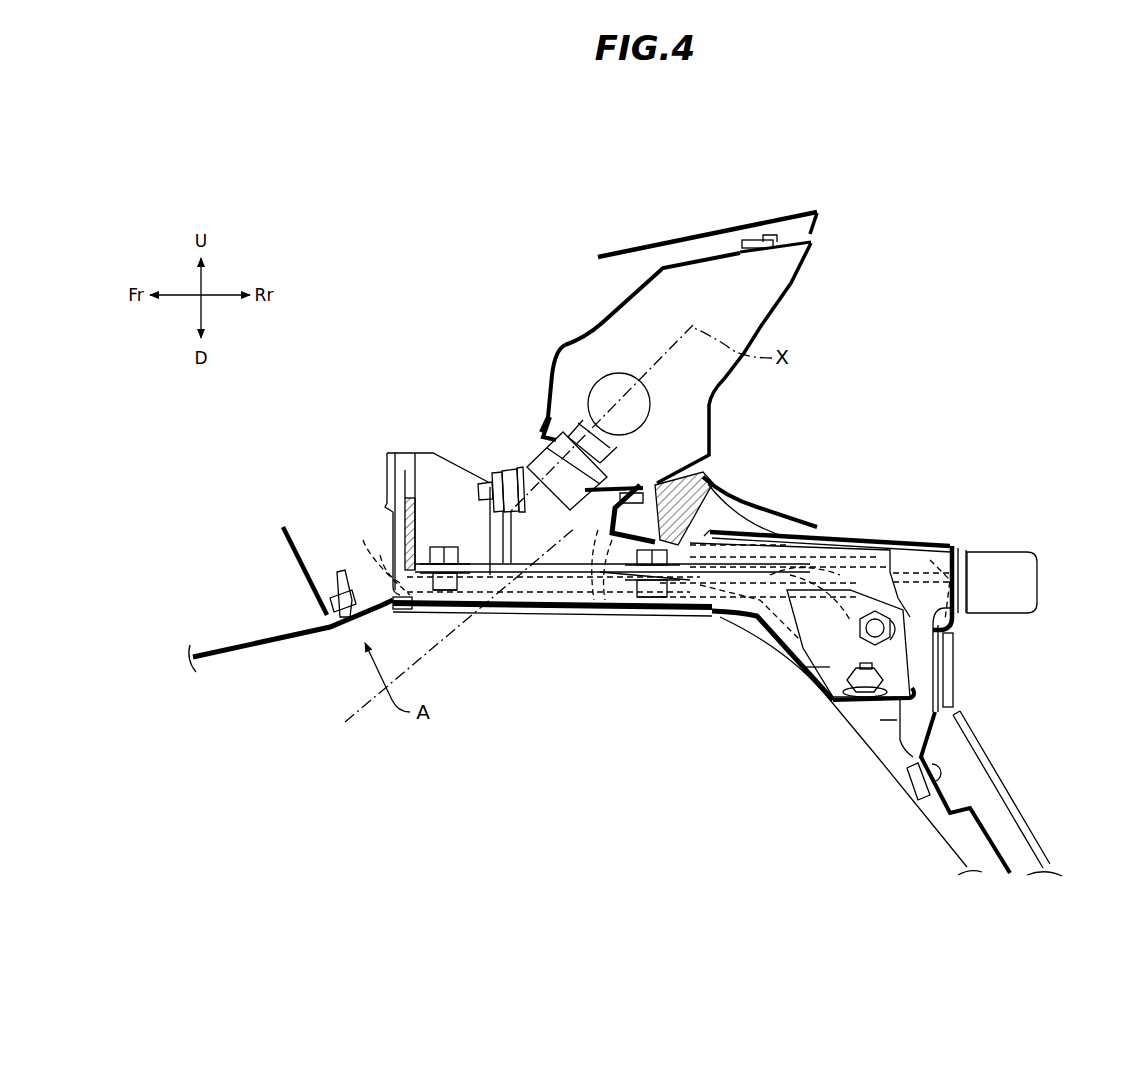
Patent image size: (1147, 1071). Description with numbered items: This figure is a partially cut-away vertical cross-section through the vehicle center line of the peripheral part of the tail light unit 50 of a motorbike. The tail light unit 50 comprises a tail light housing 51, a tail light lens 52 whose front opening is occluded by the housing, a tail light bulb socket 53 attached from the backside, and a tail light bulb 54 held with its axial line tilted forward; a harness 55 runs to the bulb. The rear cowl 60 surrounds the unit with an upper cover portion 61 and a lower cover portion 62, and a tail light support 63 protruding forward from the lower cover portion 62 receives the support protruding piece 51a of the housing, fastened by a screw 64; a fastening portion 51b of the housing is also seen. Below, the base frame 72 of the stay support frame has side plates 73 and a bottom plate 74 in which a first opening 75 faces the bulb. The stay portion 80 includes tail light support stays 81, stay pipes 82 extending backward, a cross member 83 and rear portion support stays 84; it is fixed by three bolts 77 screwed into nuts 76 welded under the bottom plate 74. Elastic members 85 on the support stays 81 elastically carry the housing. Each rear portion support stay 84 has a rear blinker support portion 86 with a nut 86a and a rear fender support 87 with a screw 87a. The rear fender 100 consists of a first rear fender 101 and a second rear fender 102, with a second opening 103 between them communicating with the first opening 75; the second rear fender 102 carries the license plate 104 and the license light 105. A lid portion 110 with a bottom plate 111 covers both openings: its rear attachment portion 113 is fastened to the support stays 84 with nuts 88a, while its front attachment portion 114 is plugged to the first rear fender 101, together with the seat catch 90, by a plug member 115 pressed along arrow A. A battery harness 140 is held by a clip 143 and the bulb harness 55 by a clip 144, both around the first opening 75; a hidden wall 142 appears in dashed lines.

The tail light unit 50 is at (816, 240).
The tail light housing 51 is at (663, 266).
The support protruding piece 51a is at (585, 590).
The fastening portion 51b is at (483, 470).
The tail light lens 52 is at (793, 283).
The tail light bulb socket 53 is at (555, 372).
The tail light bulb 54 is at (622, 380).
The harness 55 is at (555, 600).
The rear cowl 60 is at (823, 207).
The upper cover portion 61 is at (695, 230).
The lower cover portion 62 is at (787, 520).
The tail light support 63 is at (723, 507).
The screw 64 is at (610, 578).
The base frame 72 is at (405, 448).
The side plate 73 is at (437, 470).
The bottom plate 74 is at (420, 603).
The first opening 75 is at (620, 596).
The nut 76 is at (445, 598).
The bolt 77 is at (440, 545).
The stay portion 80 is at (834, 542).
The tail light support stay 81 is at (505, 470).
The stay pipe 82 is at (792, 545).
The cross member 83 is at (712, 618).
The rear portion support stay 84 is at (917, 570).
The elastic member 85 is at (535, 470).
The rear blinker support portion 86 is at (942, 613).
The nut 86a is at (888, 633).
The rear fender support 87 is at (912, 790).
The screw 87a is at (942, 768).
The nut 88a is at (833, 700).
The seat catch 90 is at (392, 465).
The rear fender 100 is at (878, 530).
The first rear fender 101 is at (250, 640).
The second rear fender 102 is at (951, 560).
The second opening 103 is at (535, 614).
The license plate 104 is at (1013, 790).
The license light 105 is at (1040, 580).
The lid portion 110 is at (487, 615).
The bottom plate 111 is at (508, 612).
The rear attachment portion 113 is at (827, 667).
The front attachment portion 114 is at (335, 627).
The plug member 115 is at (361, 636).
The harness 140 is at (470, 608).
The hidden wall 142 is at (953, 550).
The clip 143 is at (418, 600).
The clip 144 is at (645, 590).